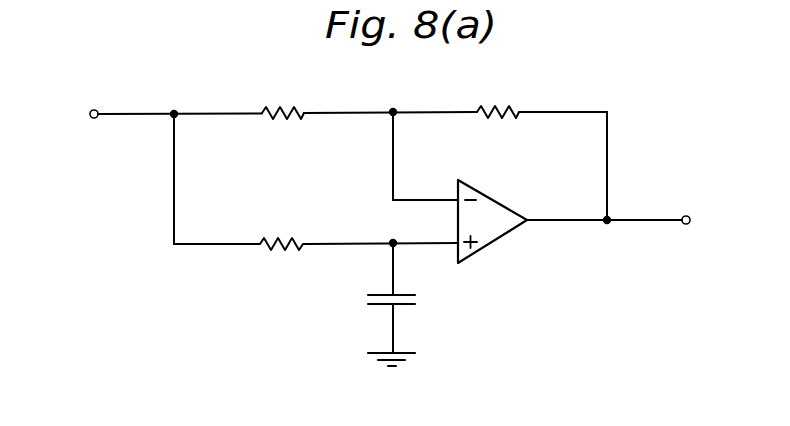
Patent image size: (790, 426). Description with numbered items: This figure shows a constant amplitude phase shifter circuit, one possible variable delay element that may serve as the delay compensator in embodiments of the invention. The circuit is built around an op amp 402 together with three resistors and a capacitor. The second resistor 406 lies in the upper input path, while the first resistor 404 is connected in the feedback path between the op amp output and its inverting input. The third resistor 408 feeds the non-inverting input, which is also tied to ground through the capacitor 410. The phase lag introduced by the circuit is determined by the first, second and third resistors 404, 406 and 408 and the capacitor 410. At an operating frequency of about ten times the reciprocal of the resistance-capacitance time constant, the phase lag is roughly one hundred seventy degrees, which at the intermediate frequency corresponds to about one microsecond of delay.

The op amp 402 is at (489, 245).
The resistor R1 404 is at (527, 82).
The resistor R2 406 is at (266, 90).
The resistor R3 408 is at (274, 268).
The capacitor C 410 is at (435, 306).